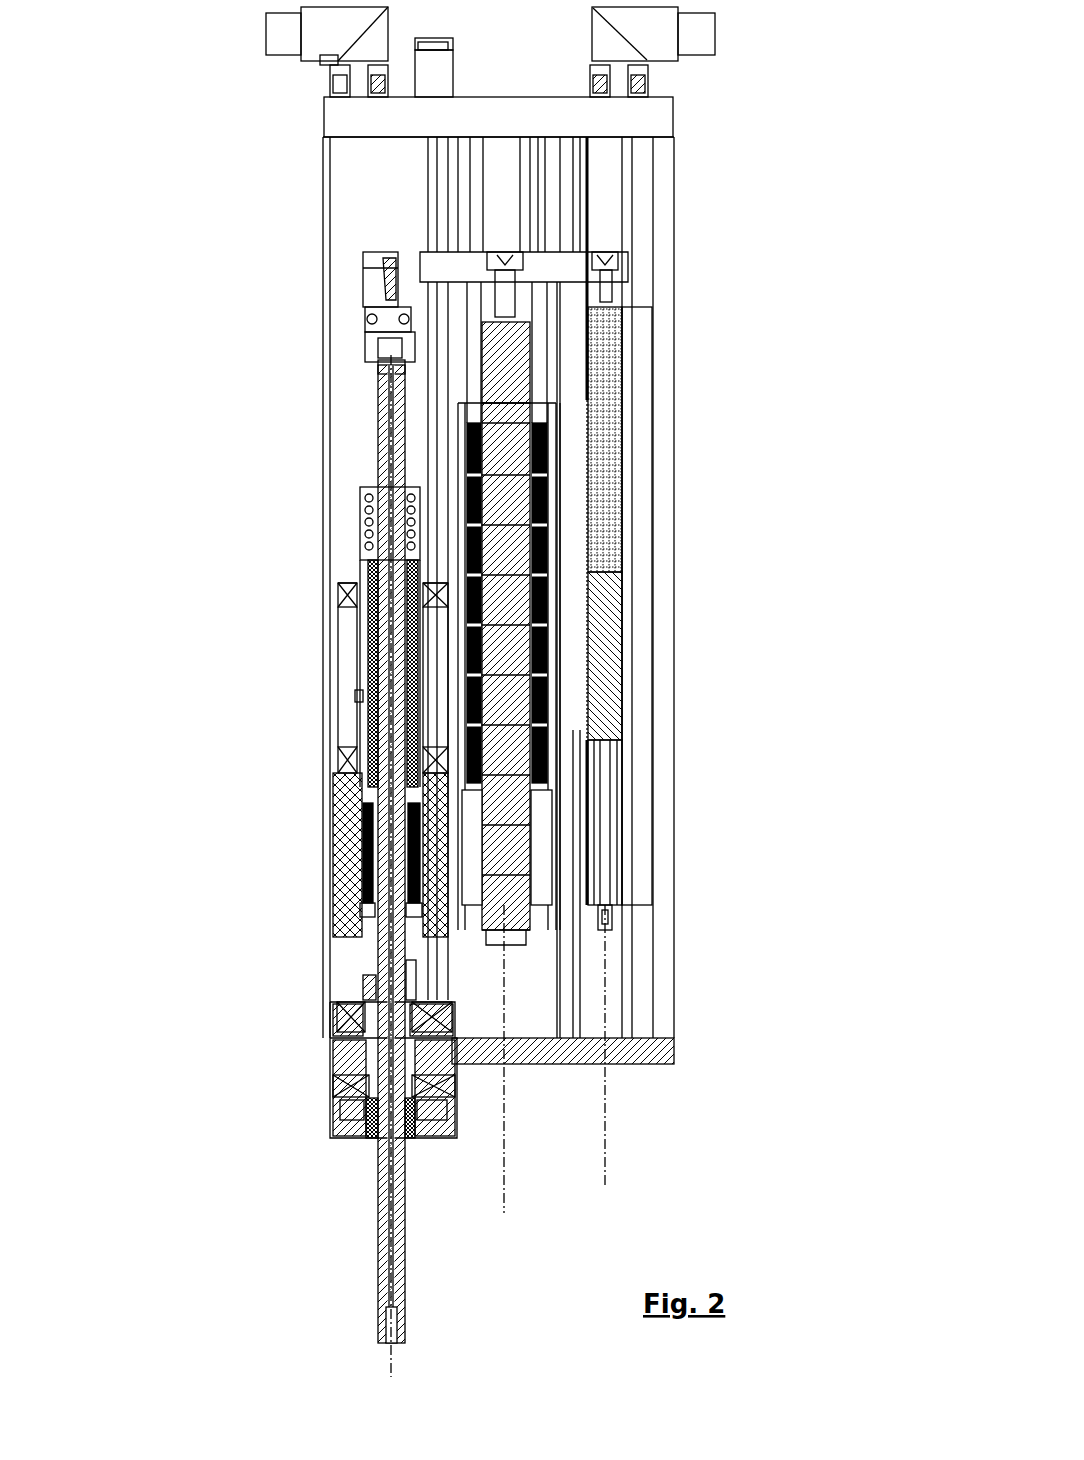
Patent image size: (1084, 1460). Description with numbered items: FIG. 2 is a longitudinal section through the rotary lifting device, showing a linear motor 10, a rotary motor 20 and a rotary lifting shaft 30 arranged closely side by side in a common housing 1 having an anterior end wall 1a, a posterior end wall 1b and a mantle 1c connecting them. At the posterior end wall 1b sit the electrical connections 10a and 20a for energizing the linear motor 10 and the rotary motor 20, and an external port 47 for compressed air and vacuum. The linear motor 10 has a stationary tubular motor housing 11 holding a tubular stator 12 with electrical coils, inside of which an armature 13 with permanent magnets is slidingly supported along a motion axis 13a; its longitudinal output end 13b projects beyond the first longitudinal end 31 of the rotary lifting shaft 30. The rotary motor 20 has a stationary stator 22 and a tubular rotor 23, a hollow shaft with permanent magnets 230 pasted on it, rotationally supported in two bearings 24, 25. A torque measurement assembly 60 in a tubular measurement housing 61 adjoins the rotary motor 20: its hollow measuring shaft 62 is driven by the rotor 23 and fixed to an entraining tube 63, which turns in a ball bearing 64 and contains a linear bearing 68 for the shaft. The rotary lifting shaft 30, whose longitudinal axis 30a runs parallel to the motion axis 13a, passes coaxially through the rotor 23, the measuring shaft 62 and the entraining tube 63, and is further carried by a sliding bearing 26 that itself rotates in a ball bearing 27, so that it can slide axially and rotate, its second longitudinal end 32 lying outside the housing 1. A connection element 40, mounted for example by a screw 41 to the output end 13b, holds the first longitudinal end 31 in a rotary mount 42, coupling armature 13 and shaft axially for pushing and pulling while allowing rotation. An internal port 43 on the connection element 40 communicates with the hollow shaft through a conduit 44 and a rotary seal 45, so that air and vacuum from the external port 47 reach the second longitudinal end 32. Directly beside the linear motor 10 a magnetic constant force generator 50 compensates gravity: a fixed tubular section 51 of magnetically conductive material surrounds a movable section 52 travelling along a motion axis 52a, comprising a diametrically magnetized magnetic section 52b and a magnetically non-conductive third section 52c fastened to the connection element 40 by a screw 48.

The housing 1 is at (676, 262).
The anterior end wall 1a is at (673, 1048).
The posterior end wall 1b is at (333, 113).
The mantle 1c is at (328, 957).
The linear motor 10 is at (550, 460).
The electrical connection 10a is at (662, 38).
The motor housing 11 is at (547, 843).
The stator 12 is at (547, 663).
The armature 13 is at (512, 547).
The motion axis 13a is at (505, 1200).
The longitudinal output end 13b is at (522, 300).
The rotary motor 20 is at (336, 843).
The electrical connection 20a is at (316, 38).
The stator 22 is at (348, 868).
The rotor 23 is at (368, 980).
The bearing 24 is at (350, 757).
The bearing 25 is at (347, 1018).
The sliding bearing 26 is at (334, 1103).
The ball bearing 27 is at (332, 1085).
The permanent magnets 230 is at (360, 883).
The rotary lifting shaft 30 is at (375, 445).
The longitudinal axis 30a is at (393, 1362).
The first longitudinal end 31 is at (380, 362).
The second longitudinal end 32 is at (382, 1322).
The connection element 40 is at (440, 268).
The screw 41 is at (508, 270).
The rotary mount 42 is at (370, 350).
The internal port 43 is at (372, 268).
The conduit 44 is at (385, 282).
The rotary seal 45 is at (373, 313).
The external port 47 is at (438, 67).
The screw 48 is at (612, 272).
The magnetic constant force generator 50 is at (654, 673).
The fixed tubular section 51 is at (640, 552).
The movable section 52 is at (625, 873).
The motion axis 52a is at (606, 772).
The magnetic section 52b is at (613, 600).
The third section 52c is at (608, 480).
The torque measurement assembly 60 is at (336, 703).
The measurement housing 61 is at (336, 620).
The measuring shaft 62 is at (365, 665).
The entraining tube 63 is at (365, 525).
The ball bearing 64 is at (370, 592).
The linear bearing 68 is at (370, 510).